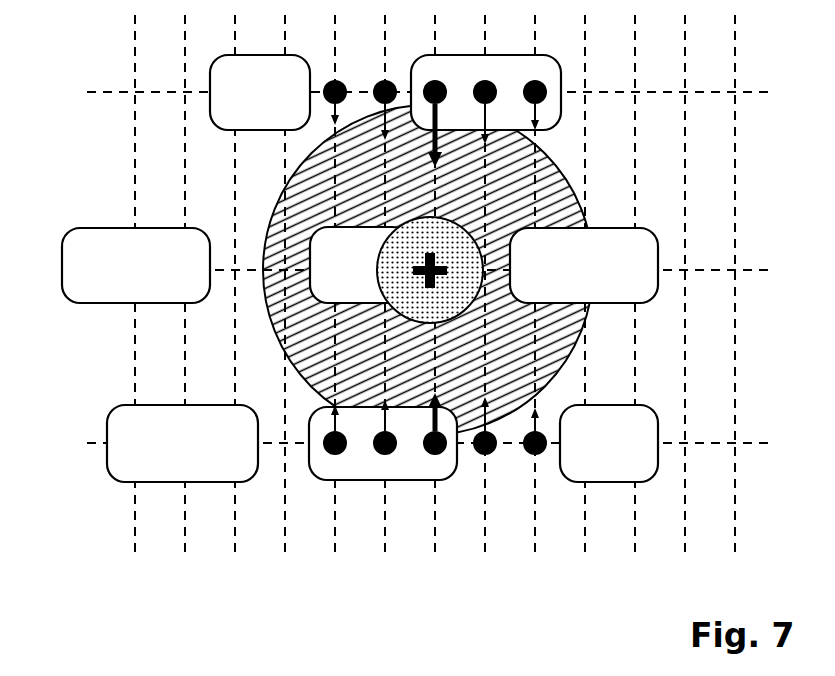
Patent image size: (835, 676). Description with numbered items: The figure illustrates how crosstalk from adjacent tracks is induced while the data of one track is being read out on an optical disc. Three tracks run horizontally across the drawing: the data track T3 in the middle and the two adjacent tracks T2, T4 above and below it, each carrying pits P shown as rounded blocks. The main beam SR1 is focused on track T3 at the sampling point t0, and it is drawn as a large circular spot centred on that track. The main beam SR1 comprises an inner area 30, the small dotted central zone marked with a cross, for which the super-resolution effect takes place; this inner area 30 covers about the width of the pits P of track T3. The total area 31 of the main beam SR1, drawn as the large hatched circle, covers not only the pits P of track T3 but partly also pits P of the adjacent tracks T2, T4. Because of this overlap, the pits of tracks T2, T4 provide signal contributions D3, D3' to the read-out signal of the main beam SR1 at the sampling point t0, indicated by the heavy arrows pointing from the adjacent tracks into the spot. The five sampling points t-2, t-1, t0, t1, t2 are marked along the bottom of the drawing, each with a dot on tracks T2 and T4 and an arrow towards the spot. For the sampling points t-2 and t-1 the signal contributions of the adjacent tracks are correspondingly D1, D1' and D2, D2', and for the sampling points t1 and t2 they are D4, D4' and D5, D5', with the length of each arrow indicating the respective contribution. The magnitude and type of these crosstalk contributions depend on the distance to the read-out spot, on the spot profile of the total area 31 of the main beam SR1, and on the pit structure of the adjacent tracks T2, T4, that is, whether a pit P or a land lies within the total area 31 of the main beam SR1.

The inner area 30 is at (588, 216).
The total area 31 is at (583, 322).
The pit P is at (228, 106).
The main beam SR1 is at (280, 200).
The adjacent track T2 is at (448, 92).
The track T3 is at (448, 271).
The adjacent track T4 is at (448, 444).
The signal contribution D1 is at (352, 134).
The signal contribution D2 is at (403, 141).
The signal contribution D3 is at (448, 148).
The signal contribution D4 is at (500, 138).
The signal contribution D5 is at (555, 130).
The signal contribution D1' is at (317, 383).
The signal contribution D2' is at (363, 399).
The signal contribution D3' is at (452, 402).
The signal contribution D4' is at (504, 402).
The signal contribution D5' is at (558, 399).
The sampling point t-2 is at (333, 569).
The sampling point t-1 is at (383, 569).
The sampling point t0 is at (431, 569).
The sampling point t1 is at (482, 569).
The sampling point t2 is at (535, 569).